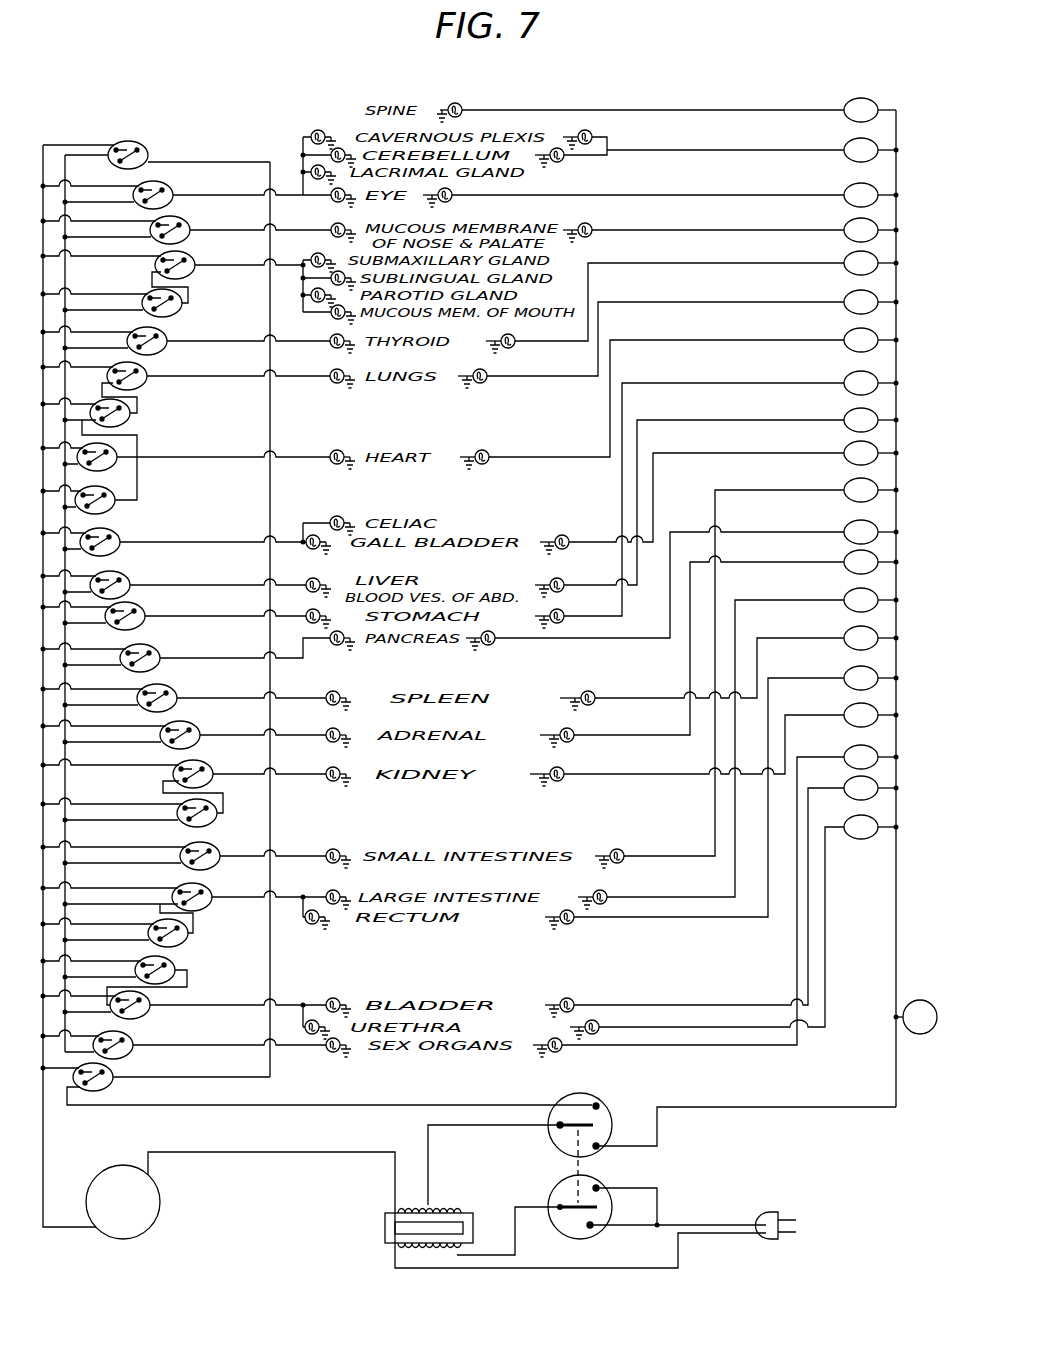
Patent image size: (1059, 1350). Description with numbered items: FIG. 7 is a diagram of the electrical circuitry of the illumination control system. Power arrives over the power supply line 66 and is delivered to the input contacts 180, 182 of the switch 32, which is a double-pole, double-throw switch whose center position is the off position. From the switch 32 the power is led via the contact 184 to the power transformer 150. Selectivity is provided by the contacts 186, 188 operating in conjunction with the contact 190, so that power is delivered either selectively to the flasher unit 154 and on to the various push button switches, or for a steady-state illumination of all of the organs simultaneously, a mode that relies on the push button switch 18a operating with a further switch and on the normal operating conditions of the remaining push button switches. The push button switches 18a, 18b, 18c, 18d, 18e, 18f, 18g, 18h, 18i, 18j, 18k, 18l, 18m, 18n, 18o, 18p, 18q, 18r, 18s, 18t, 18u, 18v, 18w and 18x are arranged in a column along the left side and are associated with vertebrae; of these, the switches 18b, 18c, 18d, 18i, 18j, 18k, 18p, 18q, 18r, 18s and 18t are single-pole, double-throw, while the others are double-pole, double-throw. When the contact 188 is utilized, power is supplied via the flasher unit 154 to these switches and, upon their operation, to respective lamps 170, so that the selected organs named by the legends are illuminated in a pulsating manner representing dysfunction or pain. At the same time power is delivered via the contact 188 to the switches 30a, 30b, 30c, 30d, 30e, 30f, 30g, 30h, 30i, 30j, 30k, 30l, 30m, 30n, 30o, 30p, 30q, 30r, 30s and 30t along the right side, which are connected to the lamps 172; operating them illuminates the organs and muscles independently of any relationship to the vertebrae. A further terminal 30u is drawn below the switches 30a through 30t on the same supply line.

The push button switch 18a is at (148, 150).
The push button switch 18b is at (170, 189).
The push button switch 18c is at (186, 223).
The push button switch 18d is at (191, 258).
The push button switch 18e is at (182, 305).
The push button switch 18f is at (167, 337).
The push button switch 18g is at (147, 371).
The push button switch 18h is at (130, 412).
The push button switch 18i is at (117, 452).
The push button switch 18j is at (115, 507).
The push button switch 18k is at (118, 536).
The push button switch 18l is at (128, 577).
The push button switch 18m is at (143, 612).
The push button switch 18n is at (158, 653).
The push button switch 18o is at (175, 691).
The push button switch 18p is at (195, 728).
The push button switch 18q is at (203, 765).
The push button switch 18r is at (217, 811).
The push button switch 18s is at (213, 850).
The push button switch 18t is at (205, 888).
The push button switch 18u is at (188, 932).
The push button switch 18v is at (187, 968).
The push button switch 18w is at (150, 1012).
The push button switch 18x is at (130, 1050).
The switch 30a is at (846, 103).
The switch 30b is at (846, 143).
The switch 30c is at (846, 188).
The switch 30d is at (846, 223).
The switch 30e is at (846, 256).
The switch 30f is at (846, 295).
The switch 30g is at (846, 333).
The switch 30h is at (846, 376).
The switch 30i is at (846, 413).
The switch 30j is at (846, 446).
The switch 30k is at (846, 483).
The switch 30l is at (846, 525).
The switch 30m is at (846, 555).
The switch 30n is at (846, 593).
The switch 30o is at (846, 631).
The switch 30p is at (846, 671).
The switch 30q is at (846, 708).
The switch 30r is at (846, 750).
The switch 30s is at (846, 781).
The switch 30t is at (848, 820).
The output terminal 30u is at (920, 1000).
The lamp 170 is at (334, 384).
The lamp 172 is at (483, 384).
The contact 184 is at (108, 1085).
The contact 186 is at (596, 1103).
The contact 188 is at (599, 1146).
The contact 190 is at (557, 1122).
The input contact 182 is at (598, 1187).
The input contact 180 is at (592, 1229).
The power transformer 150 is at (376, 1225).
The flasher unit 154 is at (107, 1238).
The switch 32 is at (670, 1172).
The power supply line 66 is at (770, 1246).